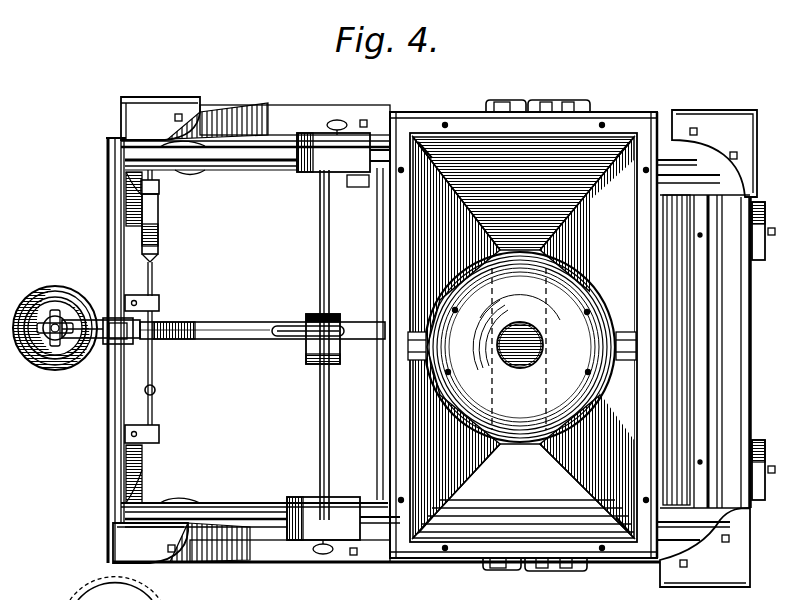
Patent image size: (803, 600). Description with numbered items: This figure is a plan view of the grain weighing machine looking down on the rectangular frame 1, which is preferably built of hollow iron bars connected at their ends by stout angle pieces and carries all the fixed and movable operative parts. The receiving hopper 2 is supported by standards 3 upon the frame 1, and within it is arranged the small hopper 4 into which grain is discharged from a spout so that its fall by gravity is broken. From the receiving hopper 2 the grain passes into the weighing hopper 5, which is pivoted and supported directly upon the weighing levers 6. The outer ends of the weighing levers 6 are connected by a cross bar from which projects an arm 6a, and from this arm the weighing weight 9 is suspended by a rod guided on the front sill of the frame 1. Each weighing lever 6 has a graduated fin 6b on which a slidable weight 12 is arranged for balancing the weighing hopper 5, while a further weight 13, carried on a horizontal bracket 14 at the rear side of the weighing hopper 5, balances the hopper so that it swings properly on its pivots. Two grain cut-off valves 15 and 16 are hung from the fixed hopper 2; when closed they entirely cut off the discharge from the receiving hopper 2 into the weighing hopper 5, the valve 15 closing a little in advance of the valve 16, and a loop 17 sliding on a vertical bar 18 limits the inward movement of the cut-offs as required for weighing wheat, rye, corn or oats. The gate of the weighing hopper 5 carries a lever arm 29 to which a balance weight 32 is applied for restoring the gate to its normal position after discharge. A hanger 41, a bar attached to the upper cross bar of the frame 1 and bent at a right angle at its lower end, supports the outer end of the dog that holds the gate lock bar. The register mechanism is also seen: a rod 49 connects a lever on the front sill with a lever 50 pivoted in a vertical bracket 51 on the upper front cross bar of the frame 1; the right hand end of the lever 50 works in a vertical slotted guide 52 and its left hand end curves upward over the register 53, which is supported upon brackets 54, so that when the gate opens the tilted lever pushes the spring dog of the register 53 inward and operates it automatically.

The rectangular frame 1 is at (133, 231).
The receiving hopper 2 is at (523, 337).
The standards 3 is at (405, 112).
The small hopper 4 is at (522, 347).
The weighing hopper 5 is at (682, 378).
The weighing levers 6 is at (236, 143).
The arm 6a is at (75, 320).
The fin 6b is at (230, 518).
The weighing weight 9 is at (55, 342).
The slidable weight 12 is at (328, 336).
The weight 13 is at (763, 243).
The horizontal bracket 14 is at (746, 350).
The cut-off valve 15 is at (574, 112).
The cut-off valve 16 is at (517, 101).
The loop 17 is at (300, 341).
The vertical bar 18 is at (340, 342).
The lever arm 29 is at (331, 301).
The weight 32 is at (312, 318).
The hanger 41 is at (373, 108).
The rod 49 is at (155, 393).
The lever 50 is at (153, 272).
The vertical arm or bracket 51 is at (161, 302).
The vertical slotted guide 52 is at (161, 435).
The register 53 is at (158, 207).
The brackets 54 is at (160, 188).